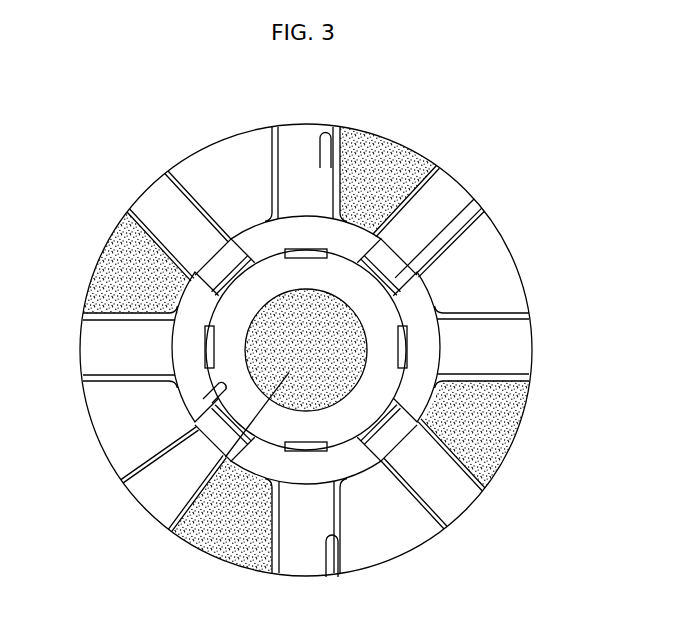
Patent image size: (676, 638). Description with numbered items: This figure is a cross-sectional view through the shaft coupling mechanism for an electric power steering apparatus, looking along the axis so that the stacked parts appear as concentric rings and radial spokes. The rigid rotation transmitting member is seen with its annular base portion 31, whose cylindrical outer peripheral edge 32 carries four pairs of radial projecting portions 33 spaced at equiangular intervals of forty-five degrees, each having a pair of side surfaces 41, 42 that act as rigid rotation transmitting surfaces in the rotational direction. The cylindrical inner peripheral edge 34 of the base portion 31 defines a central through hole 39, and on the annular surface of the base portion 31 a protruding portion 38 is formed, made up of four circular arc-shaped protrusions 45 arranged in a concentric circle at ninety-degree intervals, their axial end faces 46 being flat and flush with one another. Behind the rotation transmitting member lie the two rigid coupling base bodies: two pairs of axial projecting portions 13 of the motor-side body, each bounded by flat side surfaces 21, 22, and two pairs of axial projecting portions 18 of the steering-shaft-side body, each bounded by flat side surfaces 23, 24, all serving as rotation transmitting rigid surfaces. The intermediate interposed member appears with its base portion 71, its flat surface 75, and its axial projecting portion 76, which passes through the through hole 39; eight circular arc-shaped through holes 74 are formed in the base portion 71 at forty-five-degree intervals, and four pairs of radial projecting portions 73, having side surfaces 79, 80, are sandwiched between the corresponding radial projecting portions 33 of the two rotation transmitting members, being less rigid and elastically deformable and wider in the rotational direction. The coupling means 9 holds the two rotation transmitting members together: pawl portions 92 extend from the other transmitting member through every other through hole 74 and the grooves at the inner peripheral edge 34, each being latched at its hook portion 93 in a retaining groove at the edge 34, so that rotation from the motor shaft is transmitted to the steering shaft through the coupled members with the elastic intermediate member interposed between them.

The coupling means 9 is at (220, 430).
The axial projecting portions 13 is at (385, 150).
The axial projecting portions 18 is at (217, 165).
The flat side surface 21 is at (320, 160).
The flat side surface 22 is at (450, 187).
The flat side surface 23 is at (203, 207).
The flat side surface 24 is at (287, 163).
The annular base portion 31 is at (400, 450).
The cylindrical outer peripheral edge 32 is at (305, 510).
The radial projecting portions 33 is at (303, 160).
The cylindrical inner peripheral edge 34 is at (187, 415).
The protruding portion 38 is at (450, 352).
The through hole 39 is at (348, 480).
The side surface 41 is at (337, 165).
The side surface 42 is at (272, 155).
The circular arc-shaped protrusions 45 is at (178, 360).
The end faces 46 is at (427, 332).
The base portion 71 is at (493, 460).
The radial projecting portions 73 is at (140, 240).
The circular arc-shaped through holes 74 is at (190, 226).
The flat surface 75 is at (268, 262).
The axial projecting portion 76 is at (170, 530).
The side surface 79 is at (357, 178).
The side surface 80 is at (263, 223).
The pawl portions 92 is at (395, 465).
The hook portion 93 is at (445, 490).